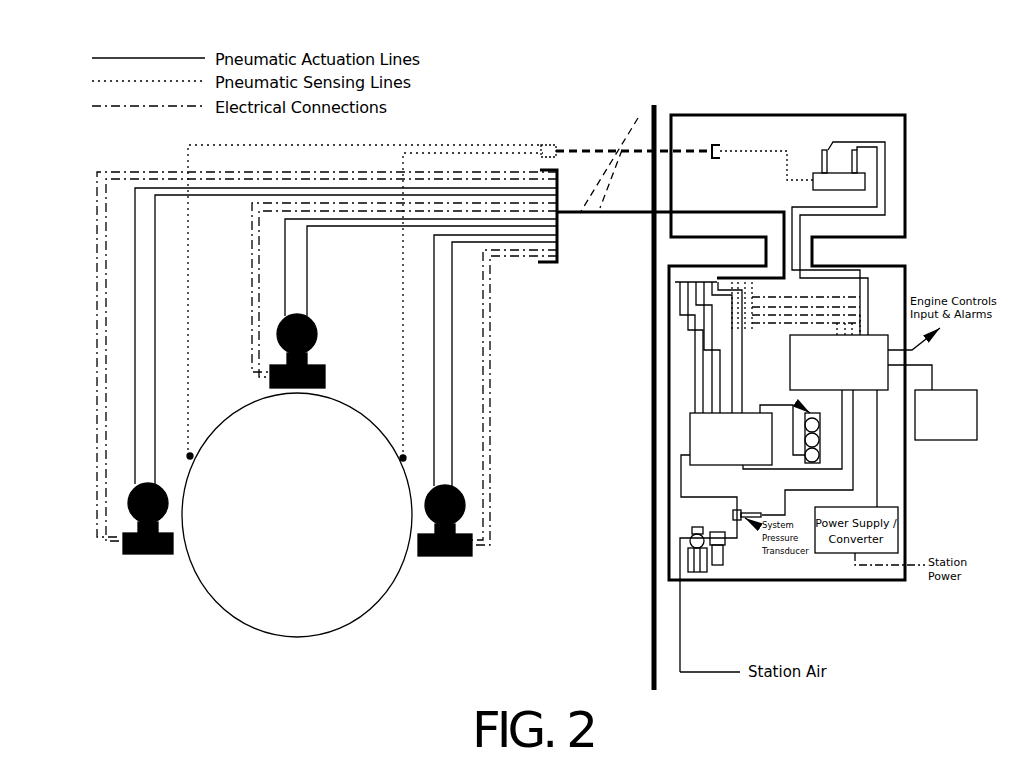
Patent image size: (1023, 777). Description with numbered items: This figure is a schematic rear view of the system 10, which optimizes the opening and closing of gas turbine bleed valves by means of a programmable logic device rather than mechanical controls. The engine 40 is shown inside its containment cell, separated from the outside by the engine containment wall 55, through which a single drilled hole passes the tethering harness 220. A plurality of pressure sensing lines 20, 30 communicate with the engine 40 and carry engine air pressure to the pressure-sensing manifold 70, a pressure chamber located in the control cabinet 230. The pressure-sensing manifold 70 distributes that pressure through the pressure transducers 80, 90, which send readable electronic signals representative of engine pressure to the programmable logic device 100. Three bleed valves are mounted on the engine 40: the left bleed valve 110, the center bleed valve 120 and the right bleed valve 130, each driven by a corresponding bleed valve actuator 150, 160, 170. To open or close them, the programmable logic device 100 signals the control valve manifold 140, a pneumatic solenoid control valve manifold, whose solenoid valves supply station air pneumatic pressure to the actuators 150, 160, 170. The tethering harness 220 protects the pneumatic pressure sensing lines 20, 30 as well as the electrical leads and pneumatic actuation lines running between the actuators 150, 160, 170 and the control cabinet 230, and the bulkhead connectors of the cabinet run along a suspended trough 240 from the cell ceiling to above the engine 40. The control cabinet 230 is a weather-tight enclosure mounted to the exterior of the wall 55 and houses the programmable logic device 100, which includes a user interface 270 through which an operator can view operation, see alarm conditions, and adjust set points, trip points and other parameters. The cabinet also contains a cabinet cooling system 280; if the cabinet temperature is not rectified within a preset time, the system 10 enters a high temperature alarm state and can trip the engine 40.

The system 10 is at (908, 63).
The pressure sensing line 20 is at (745, 150).
The pressure sensing line 30 is at (396, 459).
The engine 40 is at (319, 521).
The engine containment wall 55 is at (608, 397).
The pressure-sensing manifold 70 is at (820, 182).
The pressure transducer 80 is at (818, 160).
The pressure transducer 90 is at (850, 160).
The programmable logic device 100 is at (790, 340).
The left bleed valve 110 is at (127, 492).
The center bleed valve 120 is at (308, 318).
The right bleed valve 130 is at (463, 500).
The control valve manifold 140 is at (722, 465).
The bleed valve actuator 150 is at (109, 563).
The bleed valve actuator 160 is at (302, 407).
The bleed valve actuator 170 is at (485, 564).
The tethering harness 220 is at (640, 115).
The control cabinet 230 is at (801, 364).
The suspended trough 240 is at (726, 552).
The user interface 270 is at (947, 429).
The cabinet cooling system 280 is at (794, 442).